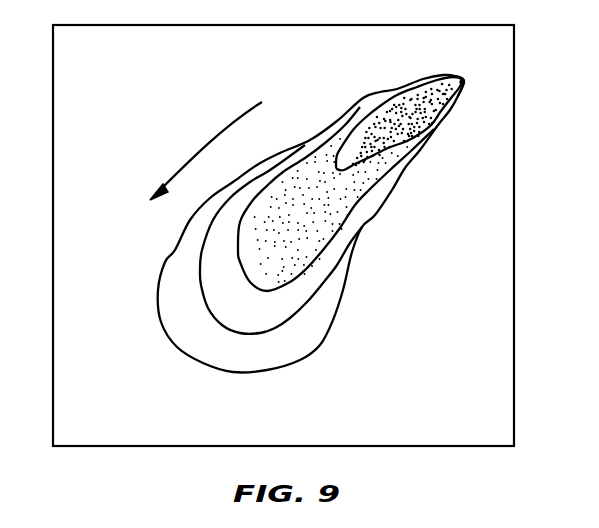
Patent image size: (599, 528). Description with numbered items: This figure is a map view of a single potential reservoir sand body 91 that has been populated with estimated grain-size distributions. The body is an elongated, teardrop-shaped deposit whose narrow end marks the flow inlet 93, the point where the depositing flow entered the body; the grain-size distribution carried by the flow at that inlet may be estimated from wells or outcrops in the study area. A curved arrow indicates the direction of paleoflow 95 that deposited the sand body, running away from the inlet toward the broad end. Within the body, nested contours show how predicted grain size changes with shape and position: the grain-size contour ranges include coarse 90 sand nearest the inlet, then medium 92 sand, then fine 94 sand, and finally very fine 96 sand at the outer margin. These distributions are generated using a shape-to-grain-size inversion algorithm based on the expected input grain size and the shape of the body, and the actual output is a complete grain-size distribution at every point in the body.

The coarse sand grain-size contour range 90 is at (463, 101).
The potential reservoir sand body 91 is at (373, 215).
The medium sand grain-size contour range 92 is at (433, 121).
The flow inlet 93 is at (463, 81).
The fine sand grain-size contour range 94 is at (405, 168).
The direction of paleoflow 95 is at (240, 117).
The very fine sand grain-size contour range 96 is at (333, 295).